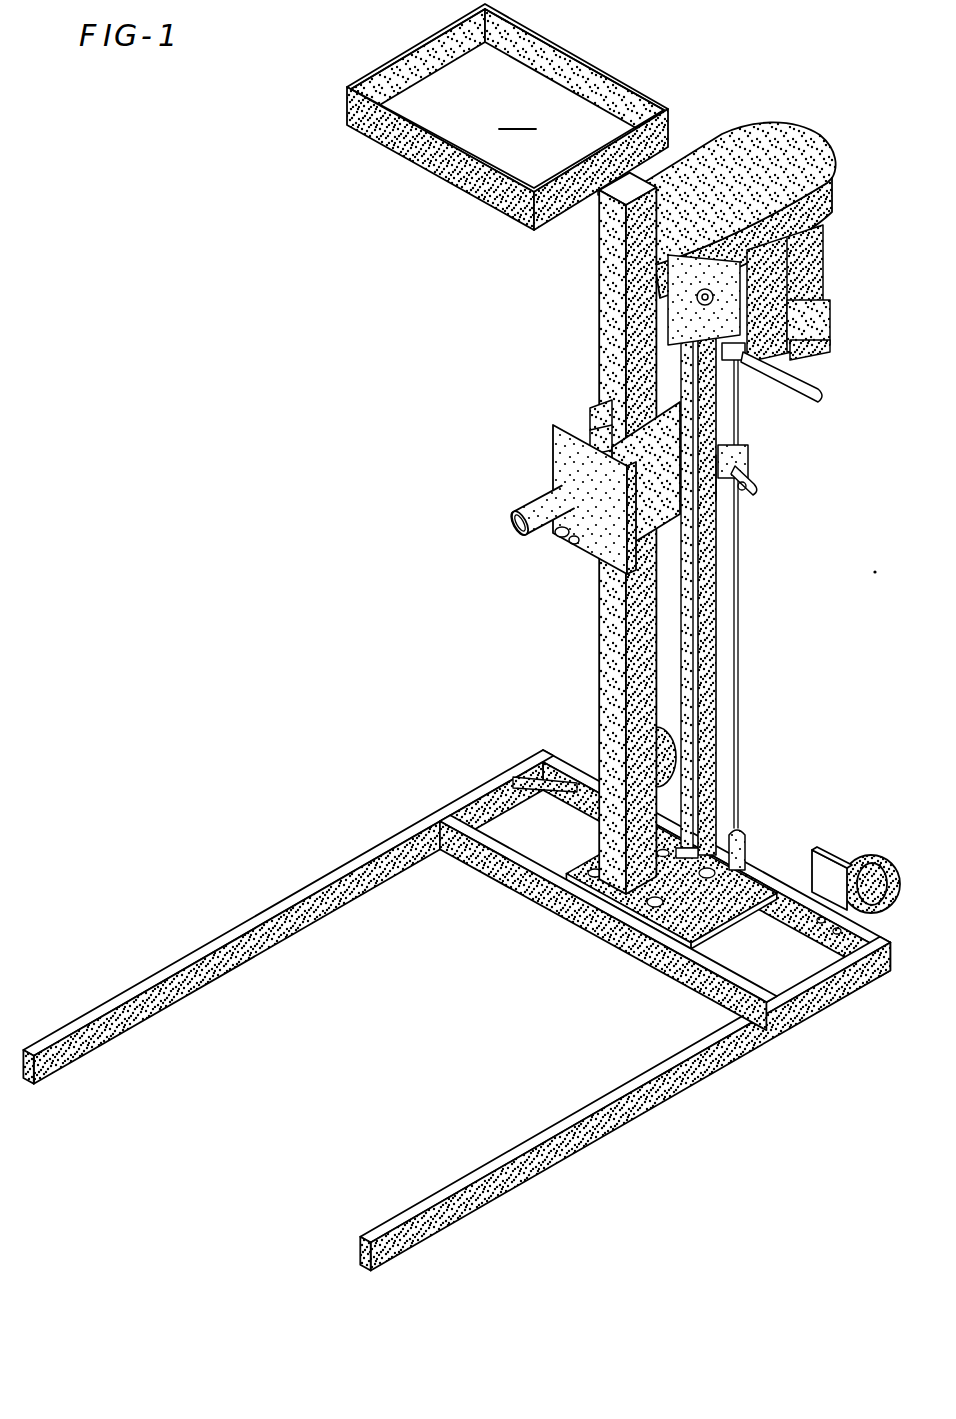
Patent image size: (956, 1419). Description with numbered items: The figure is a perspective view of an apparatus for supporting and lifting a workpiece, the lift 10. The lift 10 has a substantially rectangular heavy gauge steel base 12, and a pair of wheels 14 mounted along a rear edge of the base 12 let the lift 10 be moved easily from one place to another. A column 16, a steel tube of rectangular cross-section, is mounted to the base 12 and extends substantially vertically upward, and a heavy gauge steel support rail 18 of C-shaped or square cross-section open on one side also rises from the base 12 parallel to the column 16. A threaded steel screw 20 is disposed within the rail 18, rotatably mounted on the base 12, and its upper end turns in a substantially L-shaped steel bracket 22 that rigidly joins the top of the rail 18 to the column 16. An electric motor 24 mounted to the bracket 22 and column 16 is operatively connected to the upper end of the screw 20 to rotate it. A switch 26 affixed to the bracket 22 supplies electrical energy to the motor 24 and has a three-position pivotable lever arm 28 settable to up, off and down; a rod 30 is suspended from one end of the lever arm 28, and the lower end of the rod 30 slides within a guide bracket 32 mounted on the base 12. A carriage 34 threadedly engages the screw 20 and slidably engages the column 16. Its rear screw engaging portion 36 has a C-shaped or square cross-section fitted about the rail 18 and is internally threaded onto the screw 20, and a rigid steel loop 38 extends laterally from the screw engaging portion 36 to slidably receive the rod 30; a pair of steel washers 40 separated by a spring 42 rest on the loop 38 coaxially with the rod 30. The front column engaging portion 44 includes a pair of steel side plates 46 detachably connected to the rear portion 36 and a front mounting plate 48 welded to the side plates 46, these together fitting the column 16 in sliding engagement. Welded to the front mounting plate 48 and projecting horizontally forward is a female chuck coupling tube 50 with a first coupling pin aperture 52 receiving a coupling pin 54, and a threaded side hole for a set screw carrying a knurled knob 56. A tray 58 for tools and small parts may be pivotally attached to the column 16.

The lift 10 is at (306, 400).
The base 12 is at (362, 852).
The wheels 14 is at (858, 852).
The column 16 is at (607, 356).
The support rail 18 is at (712, 690).
The screw 20 is at (676, 645).
The bracket 22 is at (648, 298).
The electric motor 24 is at (805, 258).
The switch 26 is at (806, 318).
The lever arm 28 is at (797, 400).
The rod 30 is at (742, 408).
The guide bracket 32 is at (746, 830).
The carriage 34 is at (593, 418).
The screw engaging portion 36 is at (716, 497).
The loop 38 is at (742, 497).
The washers 40 is at (738, 482).
The spring 42 is at (742, 470).
The column engaging portion 44 is at (553, 443).
The side plates 46 is at (597, 415).
The front mounting plate 48 is at (560, 462).
The chuck coupling tube 50 is at (521, 532).
The first coupling pin aperture 52 is at (548, 500).
The coupling pin 54 is at (588, 540).
The knurled knob 56 is at (560, 545).
The tray 58 is at (507, 117).